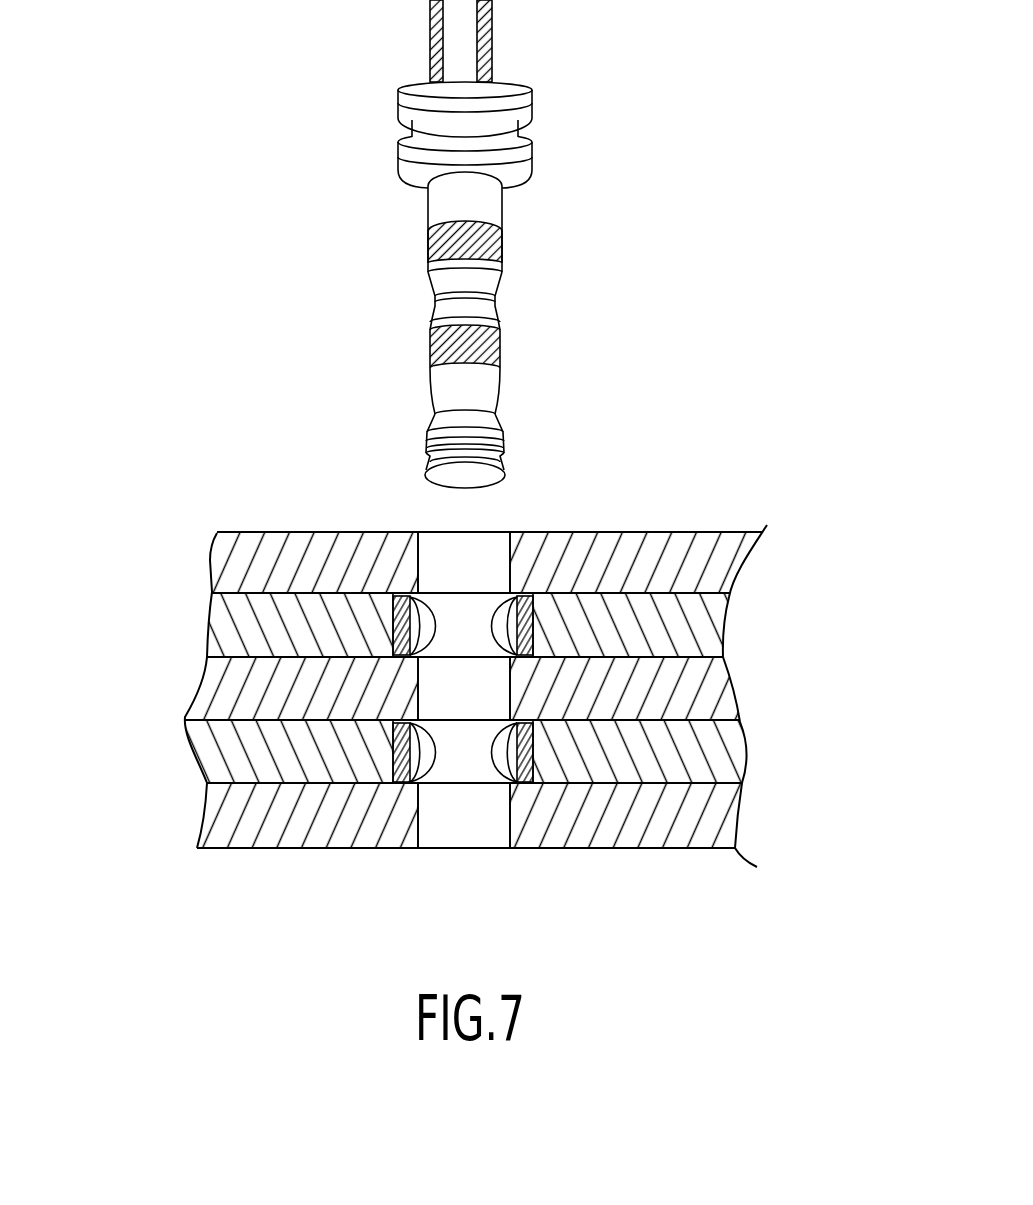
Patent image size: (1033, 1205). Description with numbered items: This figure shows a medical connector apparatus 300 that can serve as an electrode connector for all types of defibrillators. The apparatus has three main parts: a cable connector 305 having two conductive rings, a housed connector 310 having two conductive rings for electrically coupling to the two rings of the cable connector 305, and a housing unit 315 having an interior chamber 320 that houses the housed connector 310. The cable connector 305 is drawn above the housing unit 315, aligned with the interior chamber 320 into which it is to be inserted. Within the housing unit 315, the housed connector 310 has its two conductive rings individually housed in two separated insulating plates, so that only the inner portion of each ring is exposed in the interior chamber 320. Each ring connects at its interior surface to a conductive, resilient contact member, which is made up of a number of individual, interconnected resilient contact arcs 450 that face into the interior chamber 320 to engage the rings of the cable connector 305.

The medical connector apparatus 300 is at (827, 164).
The cable connector 305 is at (559, 132).
The housed connector 310 is at (388, 624).
The housing unit 315 is at (750, 528).
The interior chamber 320 is at (465, 810).
The resilient contact arcs 450 is at (490, 618).